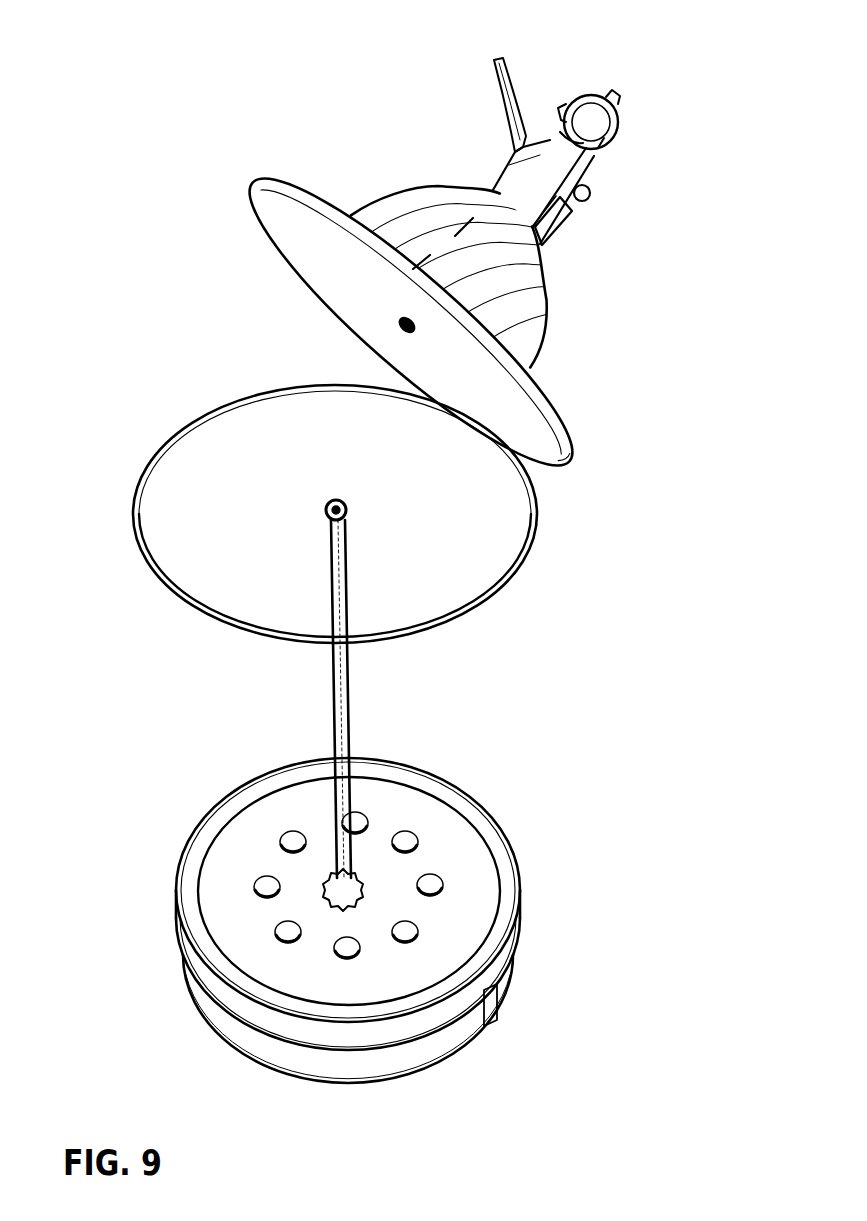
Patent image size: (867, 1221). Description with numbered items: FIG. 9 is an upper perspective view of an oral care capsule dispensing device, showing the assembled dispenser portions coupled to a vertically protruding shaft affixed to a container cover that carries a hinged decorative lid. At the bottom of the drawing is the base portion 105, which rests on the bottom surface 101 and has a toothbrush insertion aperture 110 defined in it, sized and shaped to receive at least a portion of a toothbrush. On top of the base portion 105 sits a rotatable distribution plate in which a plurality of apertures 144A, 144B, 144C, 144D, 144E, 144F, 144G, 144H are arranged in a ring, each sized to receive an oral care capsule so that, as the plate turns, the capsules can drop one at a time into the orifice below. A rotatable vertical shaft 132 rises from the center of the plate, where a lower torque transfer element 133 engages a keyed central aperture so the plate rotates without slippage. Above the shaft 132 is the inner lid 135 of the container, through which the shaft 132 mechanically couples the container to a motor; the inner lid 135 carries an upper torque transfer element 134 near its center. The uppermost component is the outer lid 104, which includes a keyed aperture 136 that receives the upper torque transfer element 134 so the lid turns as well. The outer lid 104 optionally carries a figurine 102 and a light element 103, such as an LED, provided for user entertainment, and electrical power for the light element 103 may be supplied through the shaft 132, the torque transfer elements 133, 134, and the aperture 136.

The bottom surface 101 is at (367, 1086).
The figurine 102 is at (401, 192).
The light element 103 is at (619, 95).
The outer lid 104 is at (551, 400).
The base portion 105 is at (238, 1040).
The toothbrush insertion aperture 110 is at (498, 1013).
The rotatable vertical shaft 132 is at (329, 669).
The lower torque transfer element 133 is at (337, 873).
The upper torque transfer element 134 is at (328, 513).
The inner lid 135 is at (517, 567).
The aperture 136 is at (398, 323).
The aperture 144A is at (433, 882).
The aperture 144B is at (408, 932).
The aperture 144C is at (340, 956).
The aperture 144D is at (275, 928).
The aperture 144E is at (261, 880).
The aperture 144F is at (283, 835).
The aperture 144G is at (357, 820).
The aperture 144H is at (408, 836).